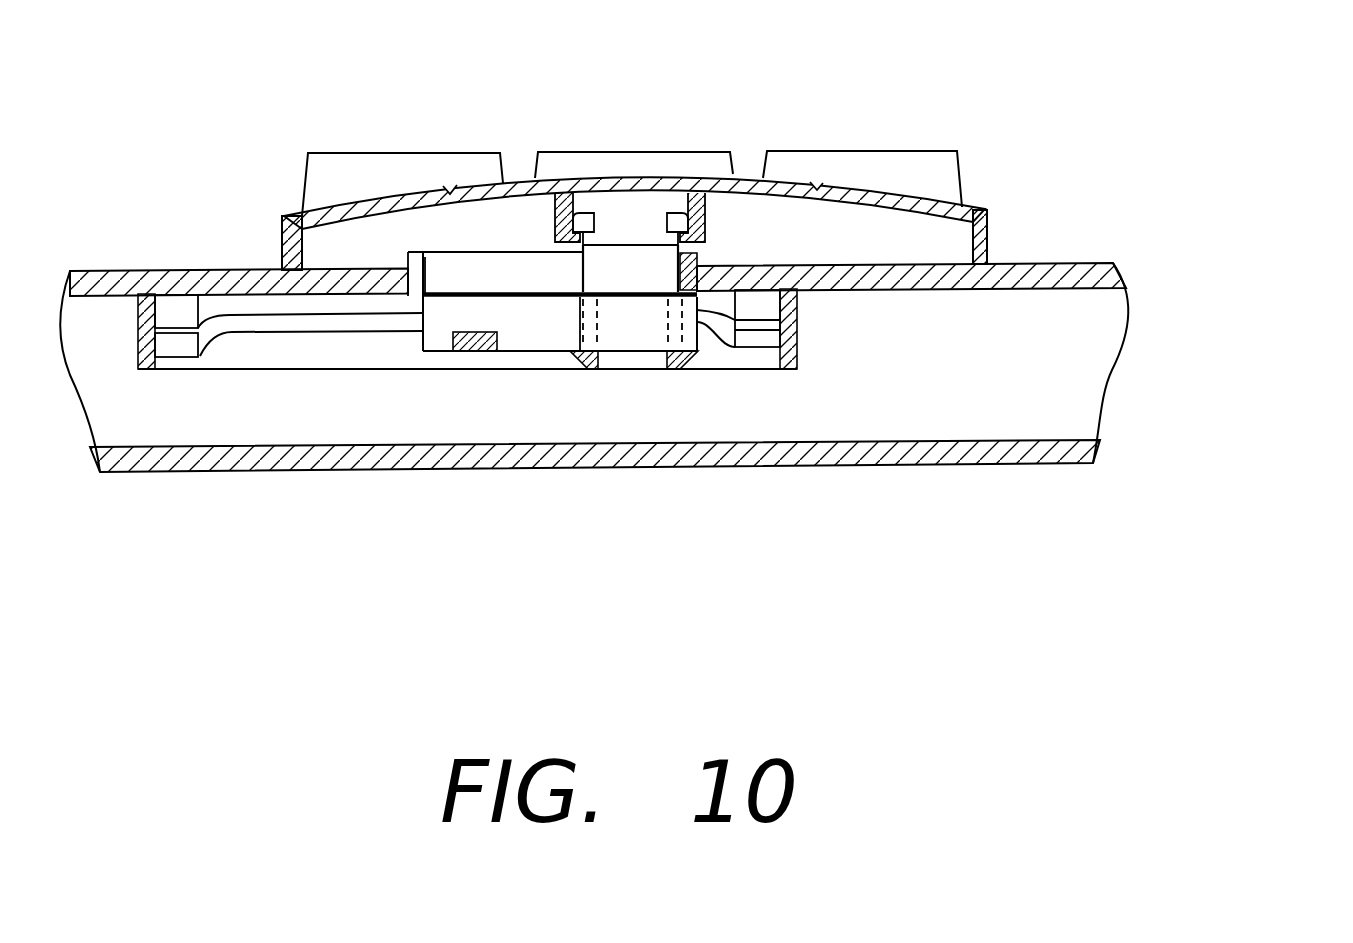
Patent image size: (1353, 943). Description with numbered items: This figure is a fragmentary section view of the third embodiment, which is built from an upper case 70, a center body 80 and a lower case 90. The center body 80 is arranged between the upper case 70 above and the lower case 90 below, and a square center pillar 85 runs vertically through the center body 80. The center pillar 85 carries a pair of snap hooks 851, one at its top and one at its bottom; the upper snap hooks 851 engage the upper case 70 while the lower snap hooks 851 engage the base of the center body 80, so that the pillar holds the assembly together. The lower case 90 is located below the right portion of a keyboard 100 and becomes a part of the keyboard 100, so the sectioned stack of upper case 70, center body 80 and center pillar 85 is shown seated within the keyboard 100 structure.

The upper case 70 is at (867, 237).
The center body 80 is at (487, 310).
The center pillar 85 is at (628, 275).
The snap hooks 851 is at (668, 213).
The lower case 90 is at (1037, 273).
The keyboard 100 is at (1083, 367).